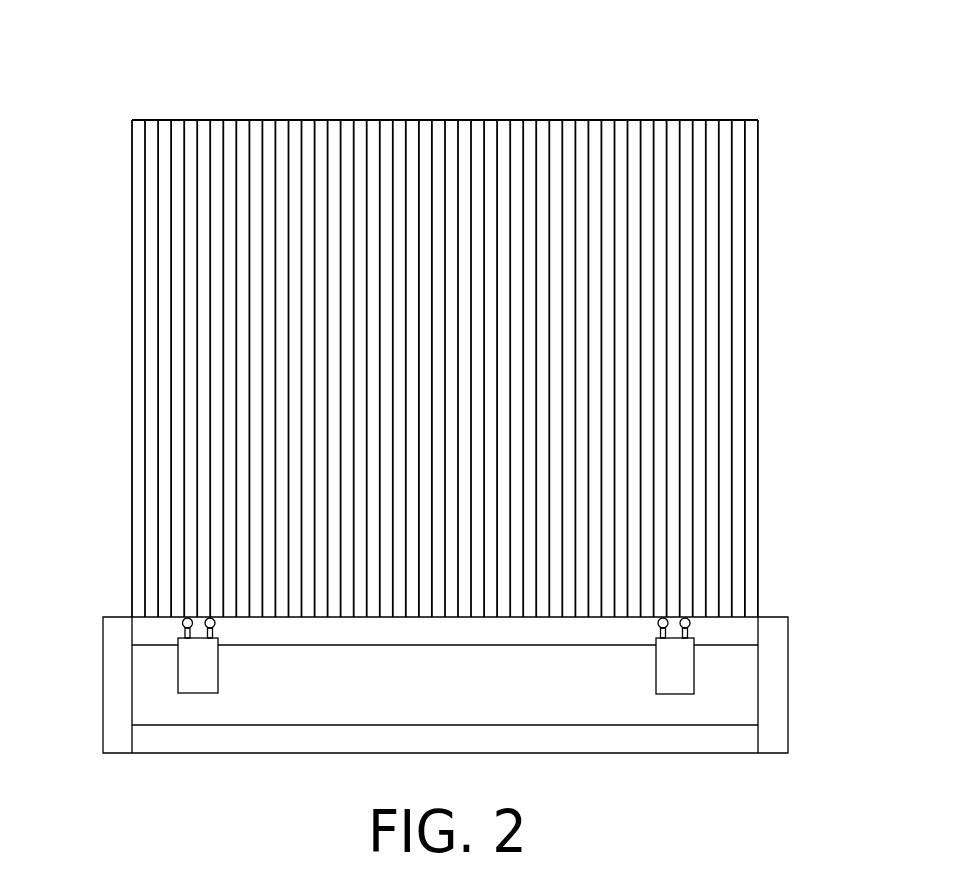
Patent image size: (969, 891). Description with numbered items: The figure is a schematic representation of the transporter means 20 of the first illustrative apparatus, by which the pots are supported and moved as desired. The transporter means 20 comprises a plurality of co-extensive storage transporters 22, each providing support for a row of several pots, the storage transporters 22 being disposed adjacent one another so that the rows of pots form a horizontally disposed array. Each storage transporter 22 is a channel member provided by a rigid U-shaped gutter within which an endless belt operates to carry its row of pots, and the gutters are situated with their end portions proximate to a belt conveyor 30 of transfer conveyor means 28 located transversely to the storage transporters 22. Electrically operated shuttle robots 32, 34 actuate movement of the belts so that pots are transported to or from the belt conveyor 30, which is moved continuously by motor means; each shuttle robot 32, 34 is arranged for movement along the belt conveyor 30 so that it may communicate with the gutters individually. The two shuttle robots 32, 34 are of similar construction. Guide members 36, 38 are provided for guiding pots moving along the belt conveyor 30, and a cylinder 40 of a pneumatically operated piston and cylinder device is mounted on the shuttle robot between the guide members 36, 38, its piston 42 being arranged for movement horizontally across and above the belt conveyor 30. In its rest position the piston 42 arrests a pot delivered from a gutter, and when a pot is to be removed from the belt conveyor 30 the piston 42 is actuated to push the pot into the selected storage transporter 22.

The transporter means 20 is at (458, 422).
The storage transporters 22 is at (587, 120).
The transfer conveyor means 28 is at (290, 755).
The belt conveyor 30 is at (409, 626).
The shuttle robot 32 is at (703, 628).
The shuttle robot 34 is at (167, 627).
The guide member 36 is at (689, 611).
The guide member 38 is at (669, 611).
The cylinder 40 is at (203, 611).
The piston 42 is at (183, 611).